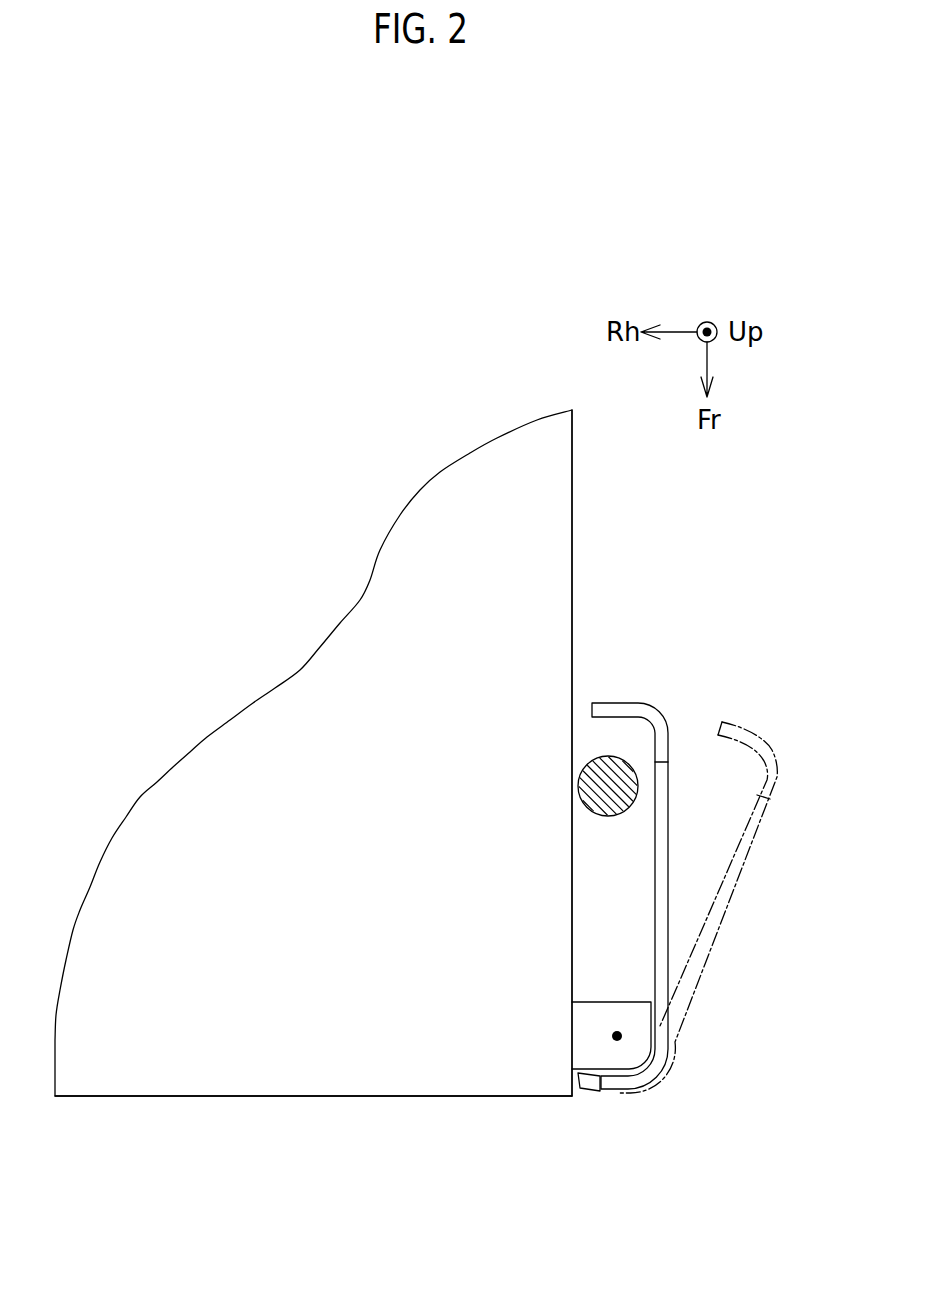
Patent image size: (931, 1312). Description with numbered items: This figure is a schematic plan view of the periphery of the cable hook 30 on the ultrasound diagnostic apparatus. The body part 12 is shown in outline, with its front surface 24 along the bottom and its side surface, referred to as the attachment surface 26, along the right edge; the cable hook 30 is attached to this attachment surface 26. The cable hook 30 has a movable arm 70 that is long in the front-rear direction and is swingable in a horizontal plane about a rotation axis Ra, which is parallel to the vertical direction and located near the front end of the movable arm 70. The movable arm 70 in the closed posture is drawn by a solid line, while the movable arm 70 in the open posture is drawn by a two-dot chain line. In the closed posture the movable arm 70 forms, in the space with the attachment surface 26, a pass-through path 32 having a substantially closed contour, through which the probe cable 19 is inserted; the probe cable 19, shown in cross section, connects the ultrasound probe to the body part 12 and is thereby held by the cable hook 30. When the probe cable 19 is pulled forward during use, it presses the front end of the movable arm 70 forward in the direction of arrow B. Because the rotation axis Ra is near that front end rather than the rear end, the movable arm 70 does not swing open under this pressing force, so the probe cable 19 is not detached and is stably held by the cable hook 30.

The body part 12 is at (351, 877).
The front surface 24 is at (288, 1097).
The attachment surface 26 is at (572, 580).
The cable hook 30 is at (675, 698).
The pass-through path 32 is at (626, 901).
The probe cable 19 is at (638, 786).
The movable arm 70 is at (668, 897).
The arrow B is at (604, 1012).
The rotation axis Ra is at (617, 1042).